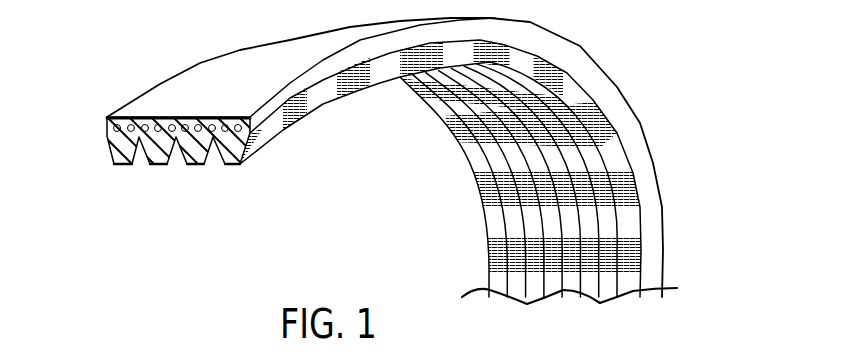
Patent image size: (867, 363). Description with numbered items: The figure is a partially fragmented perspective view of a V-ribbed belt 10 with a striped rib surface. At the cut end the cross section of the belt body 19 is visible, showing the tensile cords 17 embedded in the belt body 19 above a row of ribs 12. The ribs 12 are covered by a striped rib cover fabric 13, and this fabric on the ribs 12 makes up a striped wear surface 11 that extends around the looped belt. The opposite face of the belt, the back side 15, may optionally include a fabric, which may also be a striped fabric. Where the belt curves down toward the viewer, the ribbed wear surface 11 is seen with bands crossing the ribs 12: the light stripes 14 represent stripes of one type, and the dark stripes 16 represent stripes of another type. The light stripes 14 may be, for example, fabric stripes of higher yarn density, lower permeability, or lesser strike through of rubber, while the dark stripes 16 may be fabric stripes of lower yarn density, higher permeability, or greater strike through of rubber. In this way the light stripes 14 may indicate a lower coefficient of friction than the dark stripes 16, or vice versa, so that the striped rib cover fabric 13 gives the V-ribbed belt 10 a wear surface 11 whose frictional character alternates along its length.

The V-ribbed belt 10 is at (624, 46).
The striped wear surface 11 is at (312, 135).
The ribs 12 is at (125, 163).
The striped rib cover fabric 13 is at (233, 167).
The light stripes 14 is at (447, 110).
The back side 15 is at (243, 74).
The dark stripes 16 is at (497, 207).
The tensile cords 17 is at (131, 129).
The belt body 19 is at (115, 157).